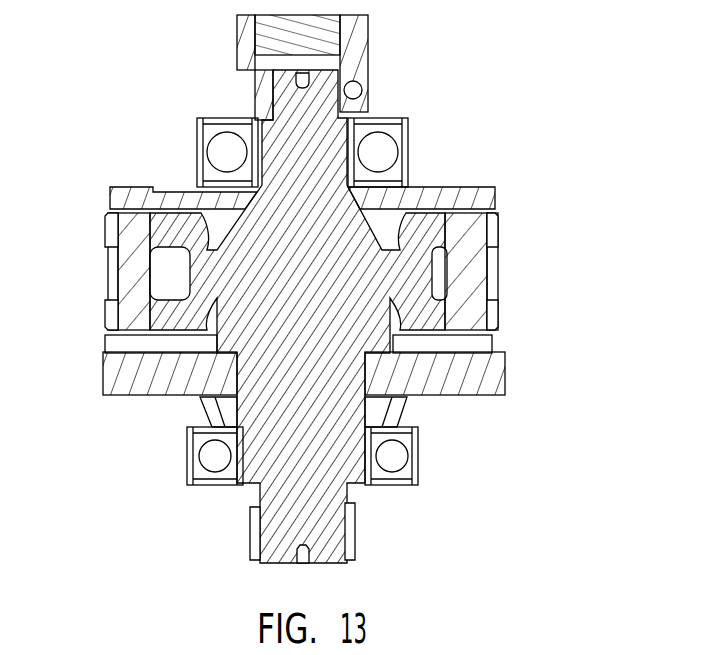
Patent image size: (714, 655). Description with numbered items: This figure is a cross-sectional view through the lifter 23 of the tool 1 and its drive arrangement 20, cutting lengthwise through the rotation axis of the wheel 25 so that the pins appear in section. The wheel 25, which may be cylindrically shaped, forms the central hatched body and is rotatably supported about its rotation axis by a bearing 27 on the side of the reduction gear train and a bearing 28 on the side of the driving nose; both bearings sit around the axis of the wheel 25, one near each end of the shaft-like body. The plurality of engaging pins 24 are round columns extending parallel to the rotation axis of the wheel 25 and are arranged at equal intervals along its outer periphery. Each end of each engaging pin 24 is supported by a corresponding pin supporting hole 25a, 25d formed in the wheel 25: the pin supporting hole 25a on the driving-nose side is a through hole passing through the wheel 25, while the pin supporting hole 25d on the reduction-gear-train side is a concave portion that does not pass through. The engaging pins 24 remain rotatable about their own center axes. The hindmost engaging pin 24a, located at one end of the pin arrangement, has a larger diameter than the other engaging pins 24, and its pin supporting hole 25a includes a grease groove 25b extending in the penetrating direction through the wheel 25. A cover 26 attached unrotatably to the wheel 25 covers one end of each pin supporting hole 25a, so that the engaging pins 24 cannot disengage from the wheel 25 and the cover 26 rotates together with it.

The steering device 1 is at (535, 33).
The reduction mechanism 20 is at (527, 87).
The lifter 23 is at (508, 153).
The engaging pins 24 is at (115, 267).
The hindmost engaging pin 24a is at (488, 282).
The wheel 25 is at (390, 183).
The pin supporting hole 25a is at (472, 252).
The grease groove 25b is at (468, 205).
The pin supporting hole 25d is at (472, 332).
The cover 26 is at (128, 195).
The bearing 27 is at (393, 456).
The bearing 28 is at (220, 138).